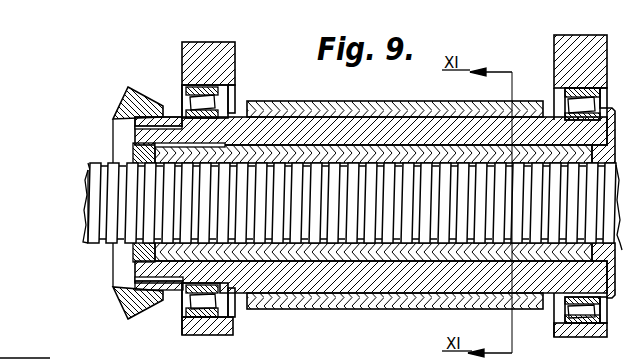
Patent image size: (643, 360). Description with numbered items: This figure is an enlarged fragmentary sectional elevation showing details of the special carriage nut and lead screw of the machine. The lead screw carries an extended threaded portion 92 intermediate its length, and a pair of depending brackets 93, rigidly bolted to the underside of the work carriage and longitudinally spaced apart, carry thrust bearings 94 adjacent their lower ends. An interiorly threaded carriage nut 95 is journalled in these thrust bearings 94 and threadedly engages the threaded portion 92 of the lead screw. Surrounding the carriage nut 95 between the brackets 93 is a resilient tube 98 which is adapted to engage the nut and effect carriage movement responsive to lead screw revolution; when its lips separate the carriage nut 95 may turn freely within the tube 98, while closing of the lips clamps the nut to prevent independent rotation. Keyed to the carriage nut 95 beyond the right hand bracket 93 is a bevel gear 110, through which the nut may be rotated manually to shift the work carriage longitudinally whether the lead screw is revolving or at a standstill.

The threaded portion 92 is at (84, 203).
The depending brackets 93 is at (193, 58).
The thrust bearings 94 is at (195, 101).
The carriage nut 95 is at (300, 246).
The tube 98 is at (313, 110).
The bevel gear 110 is at (143, 111).